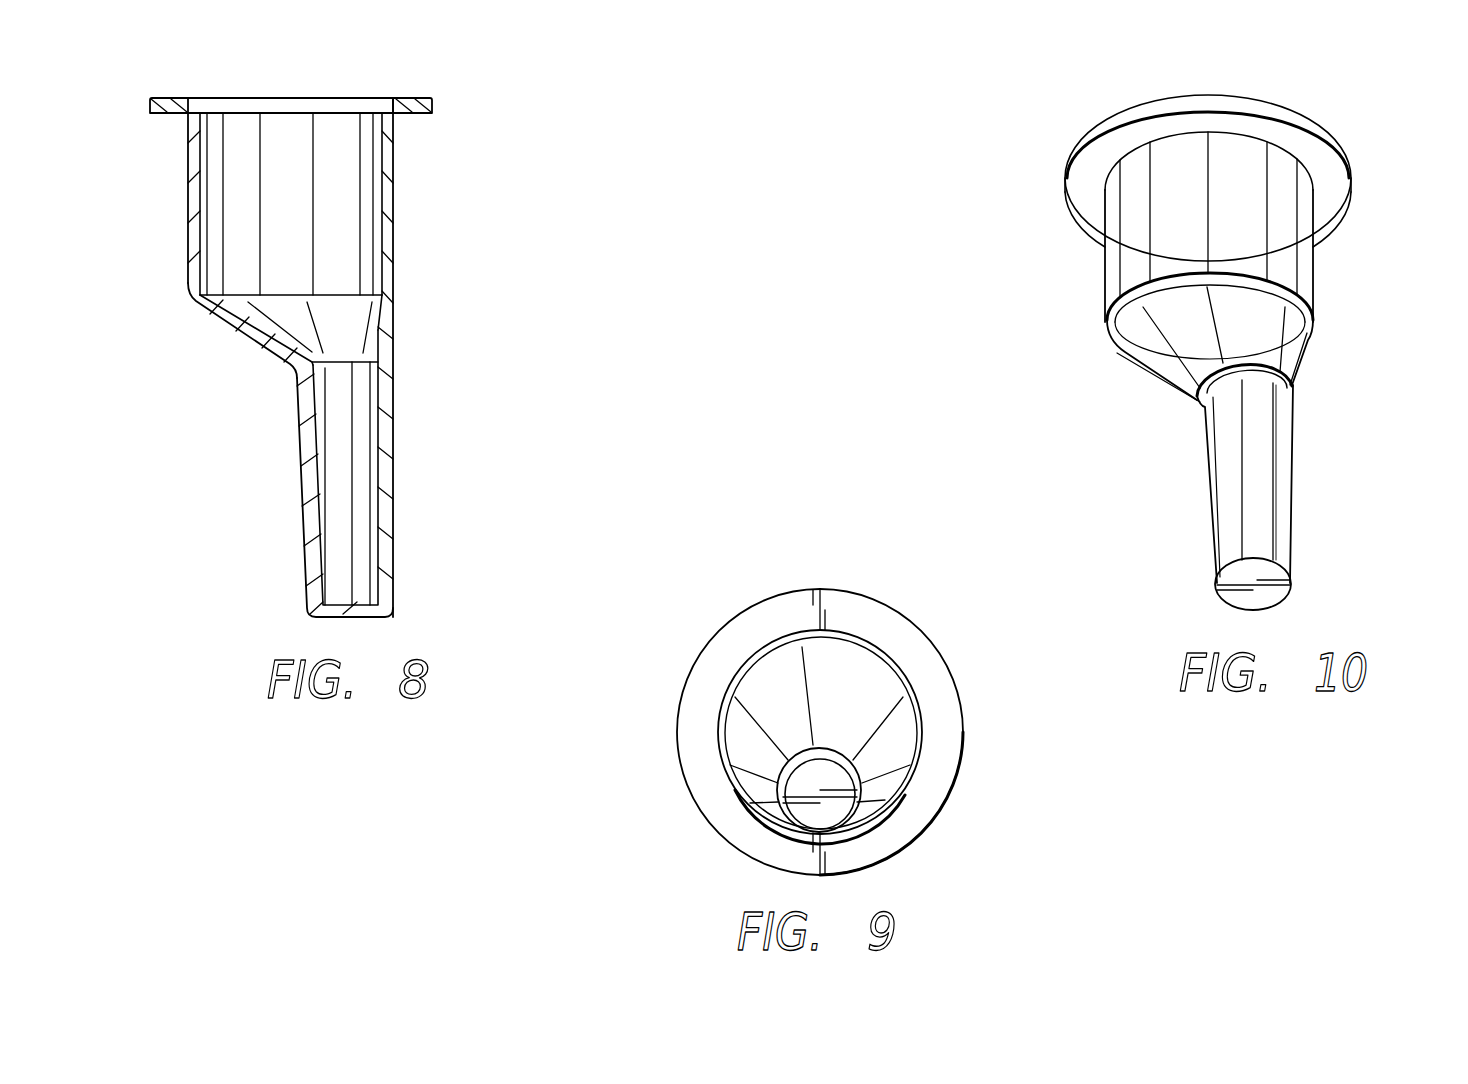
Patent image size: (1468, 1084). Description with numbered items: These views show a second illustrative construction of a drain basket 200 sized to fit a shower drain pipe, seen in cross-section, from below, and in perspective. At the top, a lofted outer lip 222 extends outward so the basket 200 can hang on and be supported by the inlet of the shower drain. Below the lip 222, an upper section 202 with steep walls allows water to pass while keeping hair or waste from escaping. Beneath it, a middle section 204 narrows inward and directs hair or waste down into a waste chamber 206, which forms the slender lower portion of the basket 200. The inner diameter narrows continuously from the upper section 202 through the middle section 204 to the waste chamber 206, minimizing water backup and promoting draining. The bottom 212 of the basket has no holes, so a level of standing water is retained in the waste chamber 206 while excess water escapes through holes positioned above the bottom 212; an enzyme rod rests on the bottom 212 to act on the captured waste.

In FIG. 8, the basket 200 is at (512, 112).
In FIG. 9, the basket 200 is at (668, 688).
In FIG. 10, the basket 200 is at (1072, 115).
In FIG. 8, the upper section 202 is at (188, 232).
In FIG. 10, the upper section 202 is at (1106, 269).
In FIG. 8, the middle section 204 is at (248, 338).
In FIG. 10, the middle section 204 is at (1141, 384).
In FIG. 8, the waste chamber 206 is at (305, 487).
In FIG. 10, the waste chamber 206 is at (1215, 513).
In FIG. 9, the bottom of the basket 212 is at (787, 823).
In FIG. 10, the bottom of the basket 212 is at (1226, 607).
In FIG. 8, the lofted outer lip 222 is at (328, 97).
In FIG. 9, the lofted outer lip 222 is at (963, 720).
In FIG. 10, the lofted outer lip 222 is at (1337, 145).